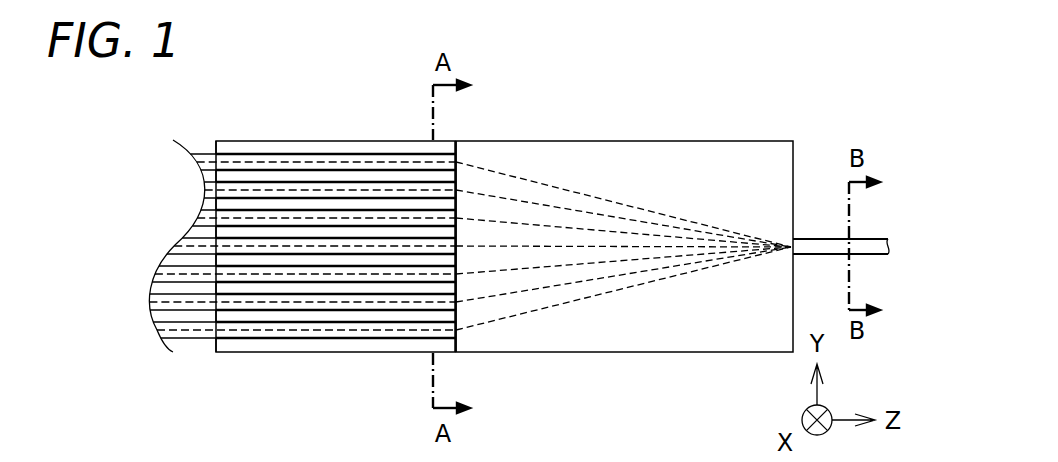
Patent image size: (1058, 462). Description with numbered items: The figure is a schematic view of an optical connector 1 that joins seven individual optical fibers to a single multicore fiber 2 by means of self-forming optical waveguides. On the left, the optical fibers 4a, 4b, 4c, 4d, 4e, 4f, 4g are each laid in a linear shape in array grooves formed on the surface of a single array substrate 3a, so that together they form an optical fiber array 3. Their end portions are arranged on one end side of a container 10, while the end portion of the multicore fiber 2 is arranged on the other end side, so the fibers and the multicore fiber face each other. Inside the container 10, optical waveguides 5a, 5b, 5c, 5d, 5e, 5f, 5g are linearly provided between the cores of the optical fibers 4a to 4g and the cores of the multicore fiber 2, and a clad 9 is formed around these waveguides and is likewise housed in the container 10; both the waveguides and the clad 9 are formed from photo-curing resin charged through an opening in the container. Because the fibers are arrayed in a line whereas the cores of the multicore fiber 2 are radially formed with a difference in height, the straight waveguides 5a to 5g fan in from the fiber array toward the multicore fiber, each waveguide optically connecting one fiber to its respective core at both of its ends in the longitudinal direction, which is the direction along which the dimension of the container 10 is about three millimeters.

The optical connector 1 is at (748, 107).
The multicore fiber 2 is at (888, 238).
The optical fiber array 3 is at (245, 141).
The array substrate 3a is at (231, 345).
The optical fiber 4a is at (348, 162).
The optical fiber 4b is at (320, 190).
The optical fiber 4c is at (293, 218).
The optical fiber 4d is at (348, 246).
The optical fiber 4e is at (320, 274).
The optical fiber 4f is at (293, 302).
The optical fiber 4g is at (264, 331).
The optical waveguide 5a is at (497, 172).
The optical waveguide 5b is at (527, 201).
The optical waveguide 5c is at (561, 227).
The optical waveguide 5d is at (594, 247).
The optical waveguide 5e is at (592, 263).
The optical waveguide 5f is at (558, 287).
The optical waveguide 5g is at (527, 312).
The clad 9 is at (492, 335).
The container 10 is at (732, 318).